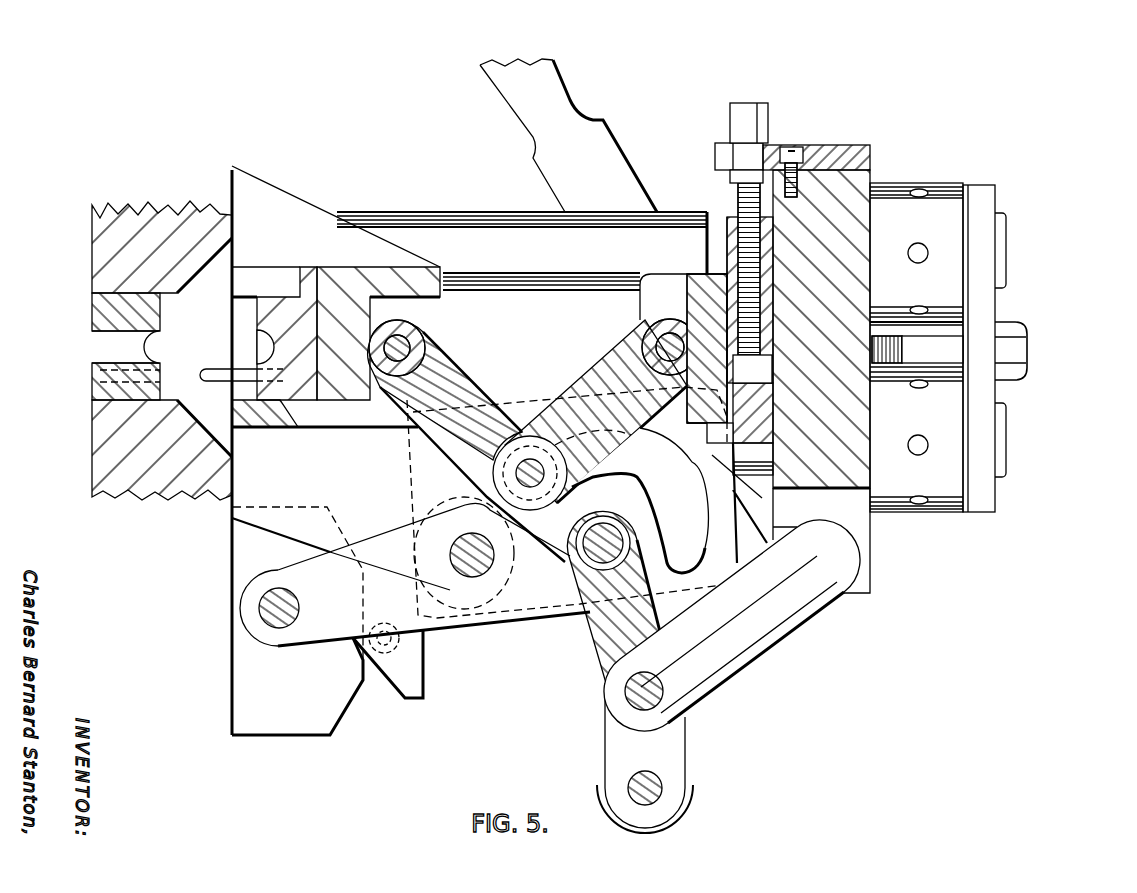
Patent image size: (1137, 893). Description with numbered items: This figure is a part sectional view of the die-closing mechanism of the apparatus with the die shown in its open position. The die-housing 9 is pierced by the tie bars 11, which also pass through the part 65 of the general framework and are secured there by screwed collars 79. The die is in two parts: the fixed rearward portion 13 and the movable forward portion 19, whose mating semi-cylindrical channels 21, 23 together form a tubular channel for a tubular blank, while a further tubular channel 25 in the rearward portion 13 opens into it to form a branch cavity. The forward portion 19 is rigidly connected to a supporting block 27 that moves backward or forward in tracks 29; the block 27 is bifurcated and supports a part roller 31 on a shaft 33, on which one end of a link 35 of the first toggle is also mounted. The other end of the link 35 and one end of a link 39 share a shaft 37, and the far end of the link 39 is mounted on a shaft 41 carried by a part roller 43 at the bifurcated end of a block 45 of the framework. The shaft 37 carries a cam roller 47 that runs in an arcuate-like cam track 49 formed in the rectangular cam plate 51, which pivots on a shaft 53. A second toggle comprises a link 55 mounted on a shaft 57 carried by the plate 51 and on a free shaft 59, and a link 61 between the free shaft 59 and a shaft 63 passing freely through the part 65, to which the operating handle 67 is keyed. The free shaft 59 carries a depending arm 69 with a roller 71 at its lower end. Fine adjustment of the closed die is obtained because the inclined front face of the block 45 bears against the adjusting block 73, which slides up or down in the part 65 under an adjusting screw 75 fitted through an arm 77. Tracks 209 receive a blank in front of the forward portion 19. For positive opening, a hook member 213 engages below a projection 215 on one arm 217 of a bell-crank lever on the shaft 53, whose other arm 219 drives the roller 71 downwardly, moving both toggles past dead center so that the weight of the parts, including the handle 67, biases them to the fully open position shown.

The die-housing 9 is at (106, 468).
The tie bars 11 is at (495, 242).
The rearward portion of the die 13 is at (92, 385).
The forward portion of the die 19 is at (280, 307).
The semi-cylindrical channel 21 is at (147, 353).
The semi-cylindrical channel 23 is at (273, 347).
The tubular channel 25 is at (99, 353).
The supporting block 27 is at (327, 313).
The tracks 29 is at (339, 273).
The part roller 31 is at (405, 322).
The shaft 33 is at (394, 333).
The link 35 is at (445, 363).
The shaft 37 is at (531, 462).
The link 39 is at (607, 402).
The shaft 41 is at (670, 340).
The part roller 43 is at (655, 338).
The block 45 is at (697, 290).
The cam roller 47 is at (492, 484).
The cam track 49 is at (695, 550).
The cam plate 51 is at (713, 480).
The shaft 53 is at (468, 573).
The link 55 is at (603, 645).
The shaft 57 is at (582, 563).
The free shaft 59 is at (653, 690).
The link 61 is at (740, 643).
The shaft 63 is at (847, 593).
The part of the general framework 65 is at (853, 460).
The operating handle 67 is at (552, 98).
The depending arm 69 is at (665, 740).
The roller 71 is at (687, 817).
The adjusting block 73 is at (763, 250).
The adjusting screw 75 is at (738, 205).
The arm 77 is at (855, 147).
The screwed collars 79 is at (943, 210).
The tracks 209 is at (208, 381).
The hook member 213 is at (400, 675).
The projection 215 is at (259, 607).
The arm of bell-crank lever 217 is at (320, 630).
The arm of bell-crank lever 219 is at (577, 608).